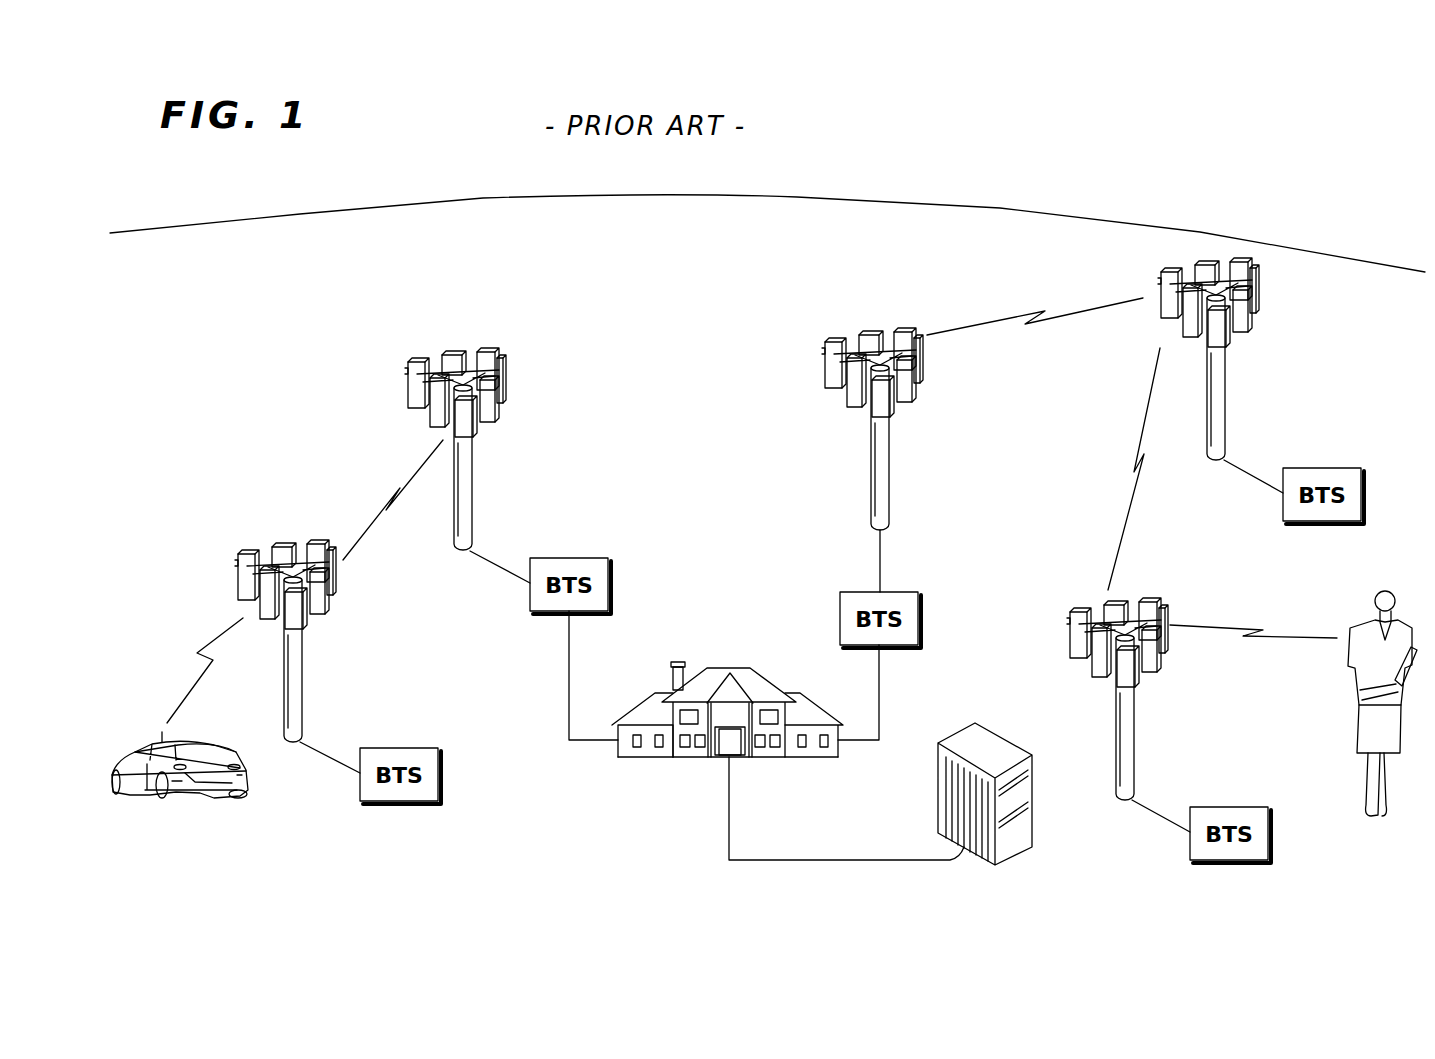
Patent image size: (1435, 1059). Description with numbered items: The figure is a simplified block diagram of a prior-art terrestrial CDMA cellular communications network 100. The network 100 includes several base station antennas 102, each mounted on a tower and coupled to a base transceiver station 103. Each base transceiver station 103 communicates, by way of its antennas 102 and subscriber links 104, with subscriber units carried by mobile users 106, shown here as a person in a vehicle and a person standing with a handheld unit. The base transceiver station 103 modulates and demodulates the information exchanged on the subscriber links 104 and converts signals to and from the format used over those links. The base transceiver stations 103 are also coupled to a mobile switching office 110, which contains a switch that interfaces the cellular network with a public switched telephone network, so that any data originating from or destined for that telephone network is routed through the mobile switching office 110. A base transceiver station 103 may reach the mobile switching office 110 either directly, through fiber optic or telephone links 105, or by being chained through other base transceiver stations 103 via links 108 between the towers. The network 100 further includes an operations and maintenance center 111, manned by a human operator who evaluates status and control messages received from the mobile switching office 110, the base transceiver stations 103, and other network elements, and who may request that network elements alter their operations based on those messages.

The terrestrial CDMA system 100 is at (475, 120).
The base station antenna 102 is at (235, 583).
The base transceiver station 103 is at (441, 777).
The subscriber link 104 is at (184, 690).
The fiber optic or telephone link 105 is at (568, 655).
The mobile user 106 is at (238, 759).
The link between base transceiver stations 108 is at (382, 507).
The mobile switching office 110 is at (730, 668).
The operations and maintenance center 111 is at (1004, 735).